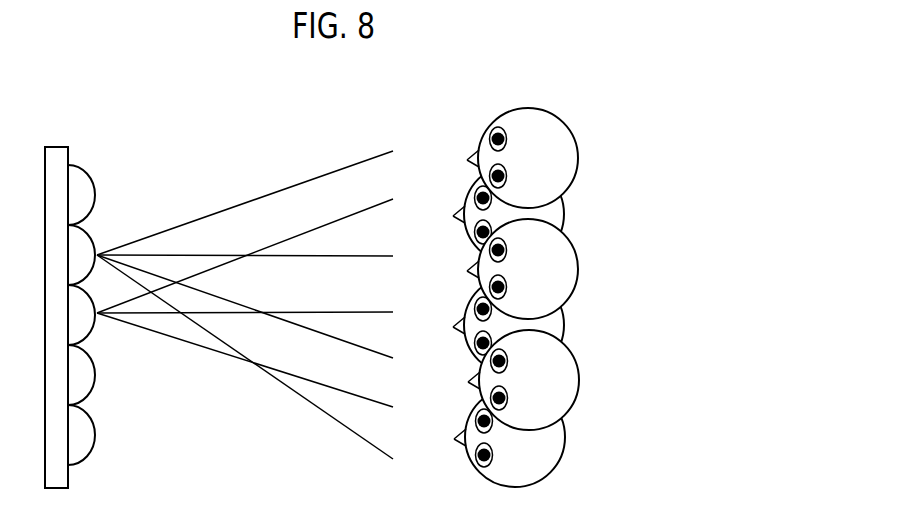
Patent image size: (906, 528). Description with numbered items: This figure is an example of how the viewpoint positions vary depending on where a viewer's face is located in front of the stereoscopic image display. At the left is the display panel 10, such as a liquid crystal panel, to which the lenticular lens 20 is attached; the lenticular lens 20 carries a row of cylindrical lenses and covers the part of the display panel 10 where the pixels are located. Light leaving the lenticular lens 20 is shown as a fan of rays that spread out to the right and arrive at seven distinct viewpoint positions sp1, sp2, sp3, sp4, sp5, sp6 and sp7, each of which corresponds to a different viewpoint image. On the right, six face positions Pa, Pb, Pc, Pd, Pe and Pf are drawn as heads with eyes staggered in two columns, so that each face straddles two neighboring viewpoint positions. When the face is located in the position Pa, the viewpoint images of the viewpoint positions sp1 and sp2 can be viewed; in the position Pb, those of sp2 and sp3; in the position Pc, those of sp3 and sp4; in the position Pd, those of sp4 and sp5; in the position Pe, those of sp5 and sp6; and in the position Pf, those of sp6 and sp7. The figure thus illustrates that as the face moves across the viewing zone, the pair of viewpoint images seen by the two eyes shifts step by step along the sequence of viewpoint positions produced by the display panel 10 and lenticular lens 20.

The display panel 10 is at (61, 147).
The lenticular lens 20 is at (90, 176).
The viewpoint position sp1 is at (265, 192).
The viewpoint position sp2 is at (265, 246).
The viewpoint position sp3 is at (265, 248).
The viewpoint position sp4 is at (265, 299).
The viewpoint position sp5 is at (265, 310).
The viewpoint position sp6 is at (265, 365).
The viewpoint position sp7 is at (265, 363).
The position Pa is at (585, 158).
The position Pb is at (568, 215).
The position Pc is at (585, 269).
The position Pd is at (570, 326).
The position Pe is at (587, 380).
The position Pf is at (570, 437).